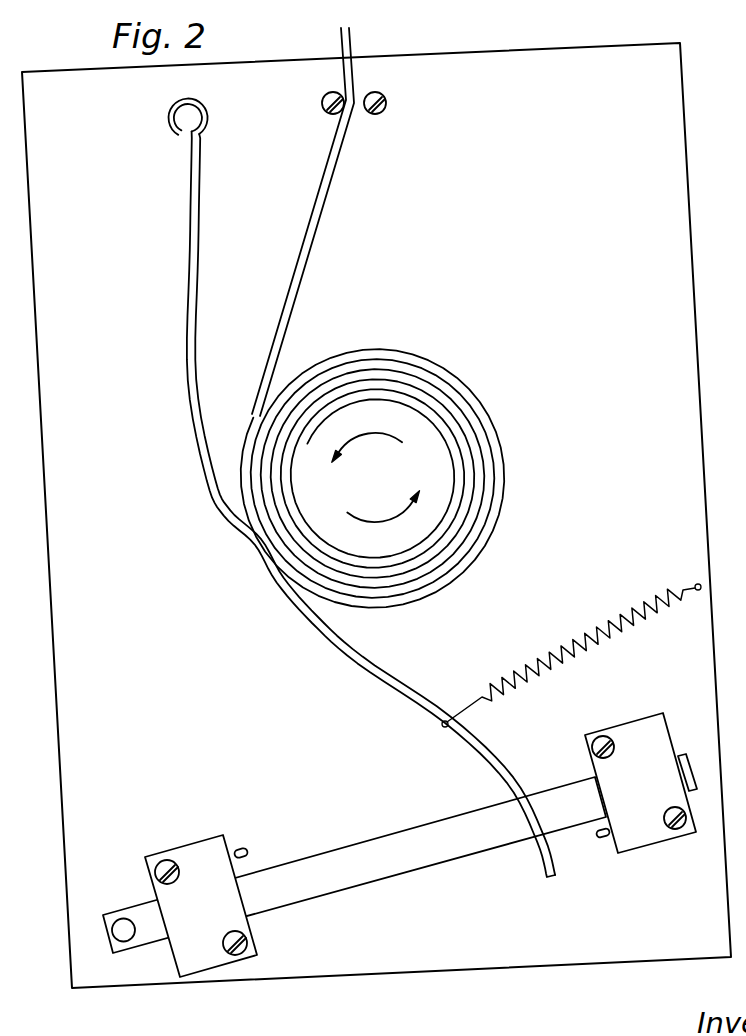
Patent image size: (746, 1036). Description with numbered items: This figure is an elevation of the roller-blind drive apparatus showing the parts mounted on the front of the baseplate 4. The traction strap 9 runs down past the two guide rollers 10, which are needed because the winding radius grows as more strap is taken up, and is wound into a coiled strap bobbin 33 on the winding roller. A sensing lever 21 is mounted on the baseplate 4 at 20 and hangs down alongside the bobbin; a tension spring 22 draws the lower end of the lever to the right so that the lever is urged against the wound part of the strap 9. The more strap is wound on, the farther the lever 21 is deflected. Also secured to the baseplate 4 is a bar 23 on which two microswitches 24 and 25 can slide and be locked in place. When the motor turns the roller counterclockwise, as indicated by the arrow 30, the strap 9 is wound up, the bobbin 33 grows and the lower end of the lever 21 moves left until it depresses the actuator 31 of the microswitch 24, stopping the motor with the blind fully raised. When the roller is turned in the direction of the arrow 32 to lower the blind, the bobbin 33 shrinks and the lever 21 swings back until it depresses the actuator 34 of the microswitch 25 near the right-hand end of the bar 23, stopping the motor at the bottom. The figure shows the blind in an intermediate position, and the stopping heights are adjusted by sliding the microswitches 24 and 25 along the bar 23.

The baseplate 4 is at (575, 64).
The traction strap 9 is at (312, 230).
The guide rollers 10 is at (323, 107).
The lever mounting 20 is at (183, 118).
The lever 21 is at (191, 237).
The spring 22 is at (630, 613).
The bar 23 is at (395, 863).
The microswitch 24 is at (195, 858).
The microswitch 25 is at (648, 730).
The arrow 30 is at (390, 432).
The actuator 31 is at (250, 851).
The arrow 32 is at (377, 522).
The strap bobbin 33 is at (477, 437).
The actuator 34 is at (603, 840).